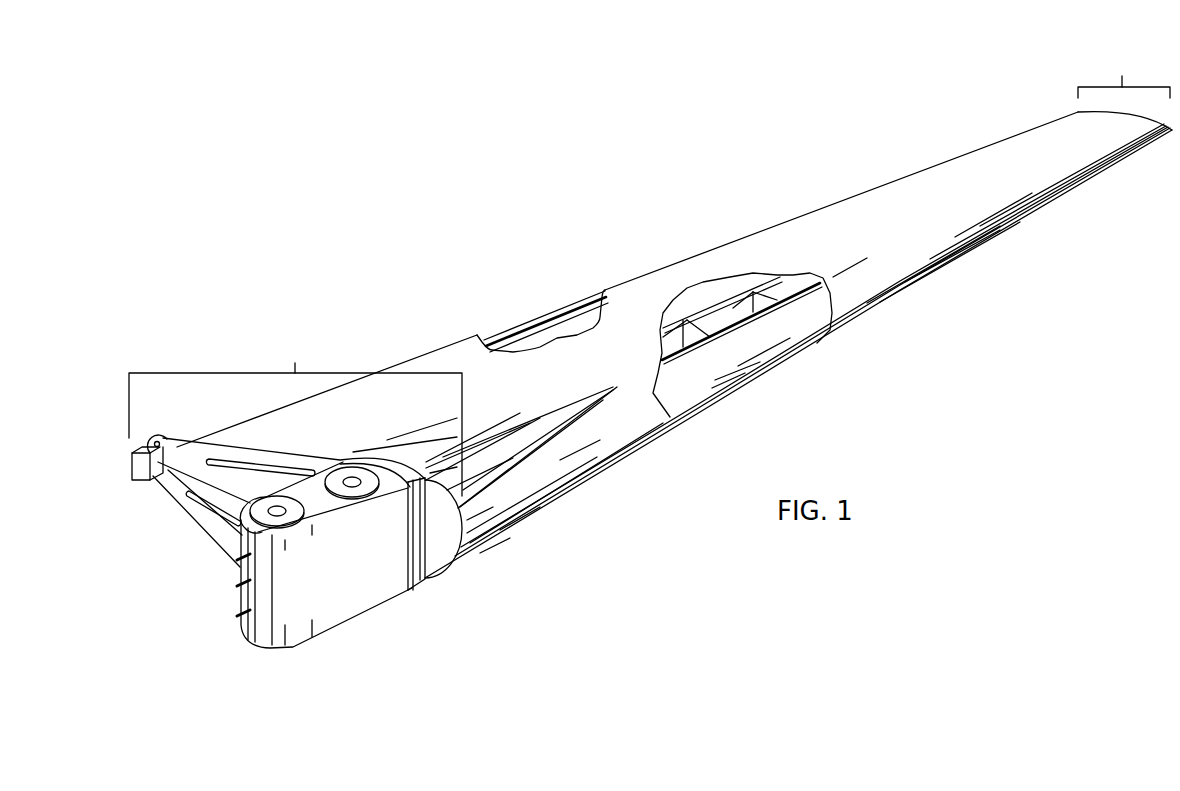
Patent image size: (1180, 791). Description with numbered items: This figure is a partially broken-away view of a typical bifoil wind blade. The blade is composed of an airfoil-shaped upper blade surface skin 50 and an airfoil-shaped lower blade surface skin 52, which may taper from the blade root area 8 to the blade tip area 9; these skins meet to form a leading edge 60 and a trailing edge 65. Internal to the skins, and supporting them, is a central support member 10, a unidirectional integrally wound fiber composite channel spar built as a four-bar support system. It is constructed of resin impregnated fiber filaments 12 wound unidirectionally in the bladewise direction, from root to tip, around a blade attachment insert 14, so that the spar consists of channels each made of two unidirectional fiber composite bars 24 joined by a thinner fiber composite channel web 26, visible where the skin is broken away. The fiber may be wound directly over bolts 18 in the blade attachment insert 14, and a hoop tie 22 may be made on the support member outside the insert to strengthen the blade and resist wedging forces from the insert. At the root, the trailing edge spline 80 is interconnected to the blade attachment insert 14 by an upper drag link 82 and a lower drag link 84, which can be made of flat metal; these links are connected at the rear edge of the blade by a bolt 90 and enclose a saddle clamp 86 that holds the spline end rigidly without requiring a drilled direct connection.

The blade root area 8 is at (295, 417).
The blade tip area 9 is at (1124, 75).
The central support member 10 is at (674, 345).
The resin impregnated fiber filaments 12 is at (737, 380).
The blade attachment insert 14 is at (317, 515).
The bolts 18 is at (237, 557).
The hoop tie 22 is at (420, 573).
The unidirectional fiber composite bars 24 is at (708, 308).
The fiber composite channel web 26 is at (683, 403).
The upper blade surface skin 50 is at (813, 228).
The lower blade surface skin 52 is at (928, 278).
The leading edge 60 is at (1048, 205).
The trailing edge 65 is at (968, 152).
The trailing edge spline 80 is at (563, 310).
The upper drag link 82 is at (263, 458).
The lower drag link 84 is at (217, 543).
The saddle clamp 86 is at (143, 470).
The bolt 90 is at (157, 440).